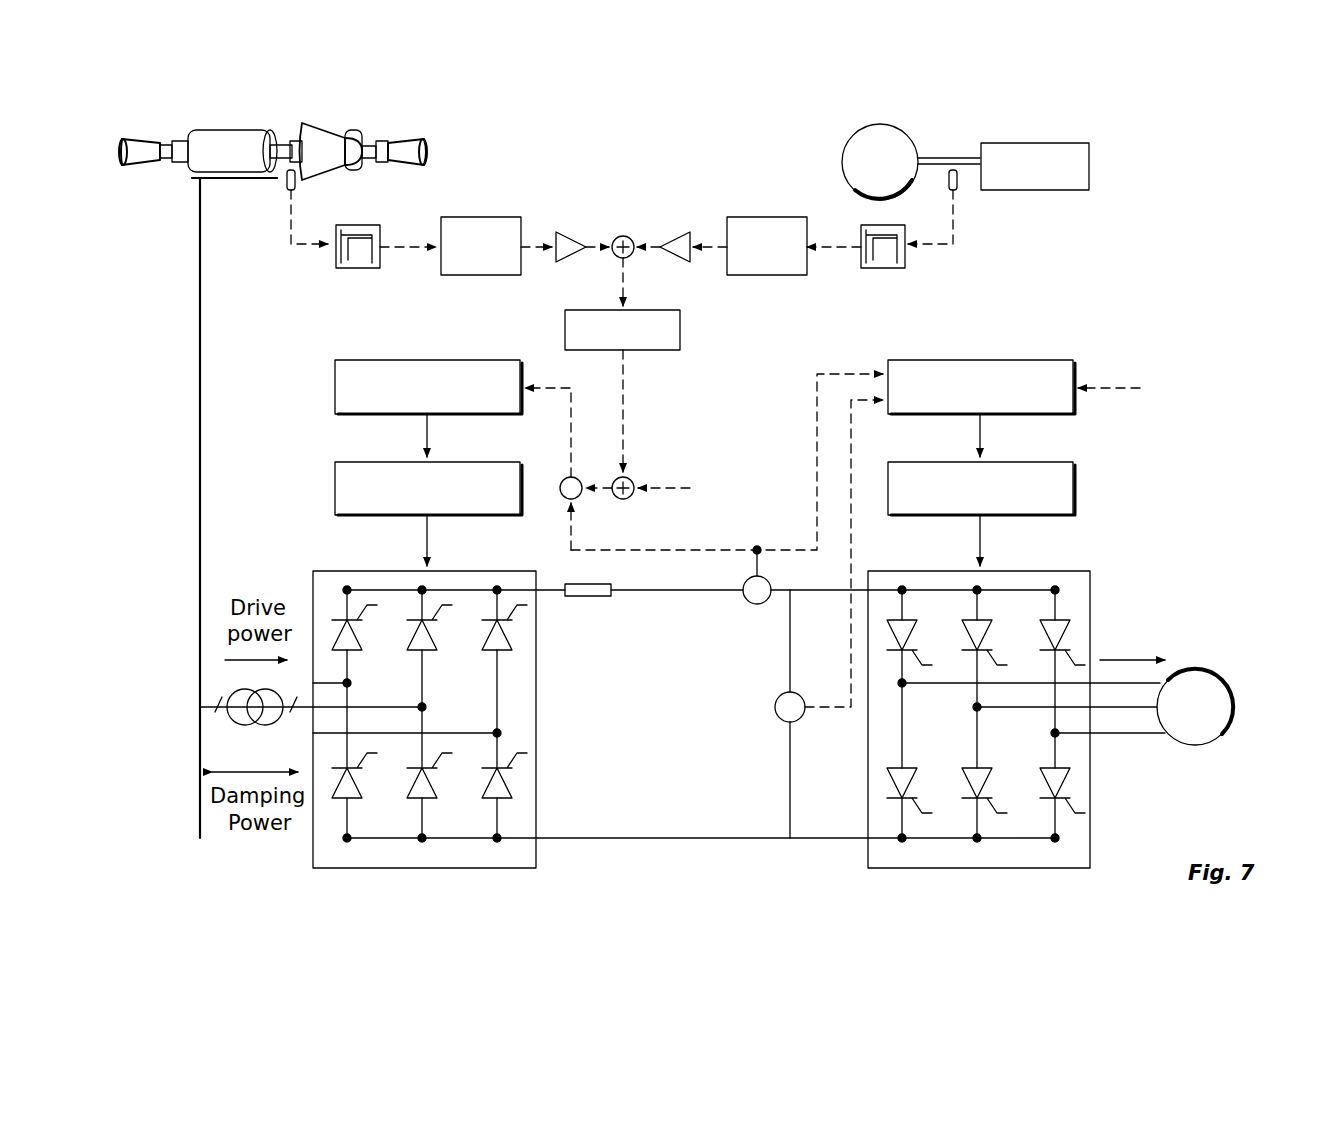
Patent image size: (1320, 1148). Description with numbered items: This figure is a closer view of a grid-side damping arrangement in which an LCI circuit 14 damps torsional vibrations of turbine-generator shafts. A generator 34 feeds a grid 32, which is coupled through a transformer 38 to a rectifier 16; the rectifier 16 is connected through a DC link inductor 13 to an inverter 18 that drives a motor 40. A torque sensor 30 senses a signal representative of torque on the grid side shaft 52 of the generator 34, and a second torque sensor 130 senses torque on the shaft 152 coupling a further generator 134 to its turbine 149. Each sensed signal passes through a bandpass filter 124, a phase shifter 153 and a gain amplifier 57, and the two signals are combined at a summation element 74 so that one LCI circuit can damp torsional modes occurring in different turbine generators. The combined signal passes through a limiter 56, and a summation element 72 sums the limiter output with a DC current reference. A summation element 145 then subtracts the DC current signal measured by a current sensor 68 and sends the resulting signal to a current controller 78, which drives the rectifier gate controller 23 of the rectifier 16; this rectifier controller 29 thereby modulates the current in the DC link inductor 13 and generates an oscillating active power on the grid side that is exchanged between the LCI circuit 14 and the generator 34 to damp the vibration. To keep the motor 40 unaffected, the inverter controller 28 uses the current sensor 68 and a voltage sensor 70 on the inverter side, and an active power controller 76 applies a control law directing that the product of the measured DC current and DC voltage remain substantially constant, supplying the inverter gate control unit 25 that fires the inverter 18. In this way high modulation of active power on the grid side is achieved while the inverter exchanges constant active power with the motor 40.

The generator 34 is at (228, 125).
The grid side shaft 52 is at (294, 128).
The torque sensor 30 is at (297, 182).
The bandpass filter 124 is at (336, 258).
The phase shifter 153 is at (508, 217).
The gain amplifier 57 is at (578, 234).
The summation element 74 is at (615, 257).
The limiter 56 is at (685, 322).
The summation element 72 is at (631, 479).
The summation element 145 is at (563, 495).
The current controller 78 is at (410, 360).
The rectifier gate controller 23 is at (335, 490).
The active power controller 76 is at (1030, 360).
The inverter gate control unit 25 is at (1073, 487).
The grid 32 is at (200, 410).
The transformer 38 is at (256, 725).
The LCI circuit 14 is at (572, 858).
The rectifier 16 is at (536, 743).
The DC link inductor 13 is at (594, 584).
The current sensor 68 is at (746, 600).
The voltage sensor 70 is at (778, 705).
The inverter 18 is at (1090, 778).
The motor 40 is at (1217, 672).
The generator 134 is at (852, 136).
The turbine 149 is at (1089, 170).
The shaft 152 is at (960, 137).
The torque sensor 130 is at (957, 202).
The rectifier controller 29 is at (270, 312).
The inverter controller 28 is at (1143, 433).